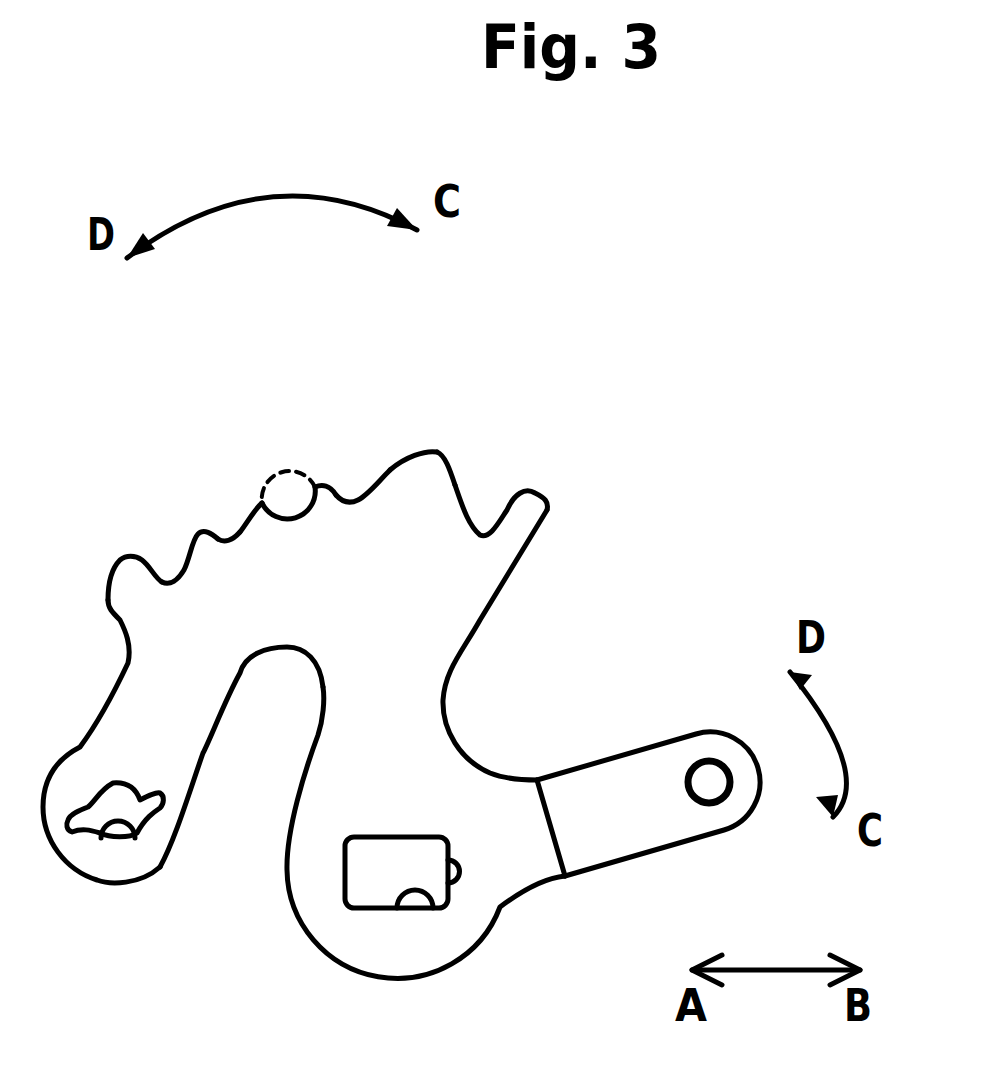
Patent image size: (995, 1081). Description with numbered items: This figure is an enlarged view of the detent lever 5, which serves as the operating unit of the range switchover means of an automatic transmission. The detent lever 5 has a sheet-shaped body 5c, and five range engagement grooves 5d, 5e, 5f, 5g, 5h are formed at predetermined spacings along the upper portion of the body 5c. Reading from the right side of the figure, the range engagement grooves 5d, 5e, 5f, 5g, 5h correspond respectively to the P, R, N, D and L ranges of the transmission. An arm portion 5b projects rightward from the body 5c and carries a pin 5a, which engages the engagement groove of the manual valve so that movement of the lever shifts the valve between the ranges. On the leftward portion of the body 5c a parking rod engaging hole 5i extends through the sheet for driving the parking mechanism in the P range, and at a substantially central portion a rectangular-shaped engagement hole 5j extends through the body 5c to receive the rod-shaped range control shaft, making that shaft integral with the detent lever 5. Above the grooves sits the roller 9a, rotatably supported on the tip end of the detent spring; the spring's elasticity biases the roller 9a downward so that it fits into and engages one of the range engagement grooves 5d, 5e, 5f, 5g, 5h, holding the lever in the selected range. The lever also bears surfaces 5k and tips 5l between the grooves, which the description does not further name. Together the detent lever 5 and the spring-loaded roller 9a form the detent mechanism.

The detent lever 5 is at (575, 568).
The pin 5a is at (708, 760).
The arm portion 5b is at (640, 860).
The sheet-shaped body 5c is at (307, 945).
The range engagement groove 5d is at (483, 520).
The range engagement groove 5e is at (354, 500).
The range engagement groove 5f is at (287, 513).
The range engagement groove 5g is at (227, 532).
The range engagement groove 5h is at (164, 578).
The parking rod engaging hole 5i is at (130, 840).
The rectangular-shaped engagement hole 5j is at (440, 908).
The teeth 5k is at (200, 530).
The tooth tips 5l is at (324, 485).
The roller 9a is at (285, 457).